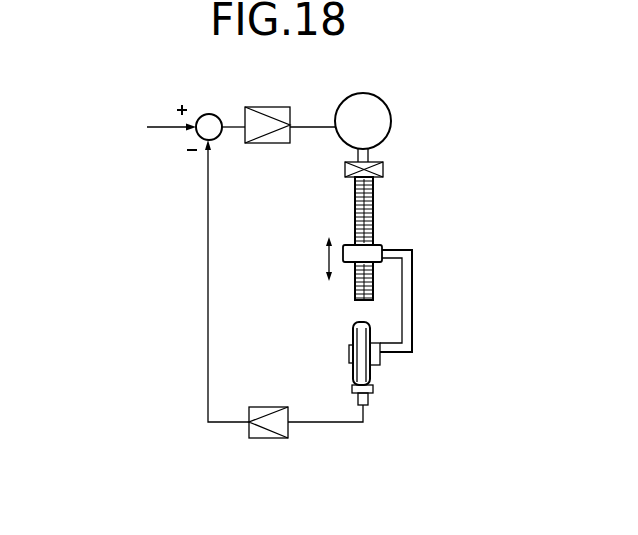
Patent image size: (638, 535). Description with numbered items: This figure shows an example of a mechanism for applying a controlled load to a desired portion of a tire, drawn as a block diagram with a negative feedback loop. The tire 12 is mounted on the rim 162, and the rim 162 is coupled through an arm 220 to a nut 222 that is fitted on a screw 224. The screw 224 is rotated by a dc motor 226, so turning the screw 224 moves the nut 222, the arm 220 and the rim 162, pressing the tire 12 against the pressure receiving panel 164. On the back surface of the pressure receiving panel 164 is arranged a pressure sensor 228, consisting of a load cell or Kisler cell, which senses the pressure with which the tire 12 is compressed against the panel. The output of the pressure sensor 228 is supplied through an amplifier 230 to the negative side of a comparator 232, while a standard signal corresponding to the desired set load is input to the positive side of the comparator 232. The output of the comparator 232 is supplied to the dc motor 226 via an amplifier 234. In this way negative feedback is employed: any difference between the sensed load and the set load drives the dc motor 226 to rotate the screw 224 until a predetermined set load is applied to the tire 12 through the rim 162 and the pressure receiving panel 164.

The tire 12 is at (353, 328).
The rim 162 is at (381, 358).
The pressure receiving panel 164 is at (373, 389).
The arm 220 is at (412, 289).
The nut 222 is at (374, 250).
The screw 224 is at (353, 203).
The dc motor 226 is at (391, 113).
The pressure sensor 228 is at (367, 403).
The amplifier 230 is at (273, 438).
The comparator 232 is at (209, 114).
The amplifier 234 is at (280, 107).